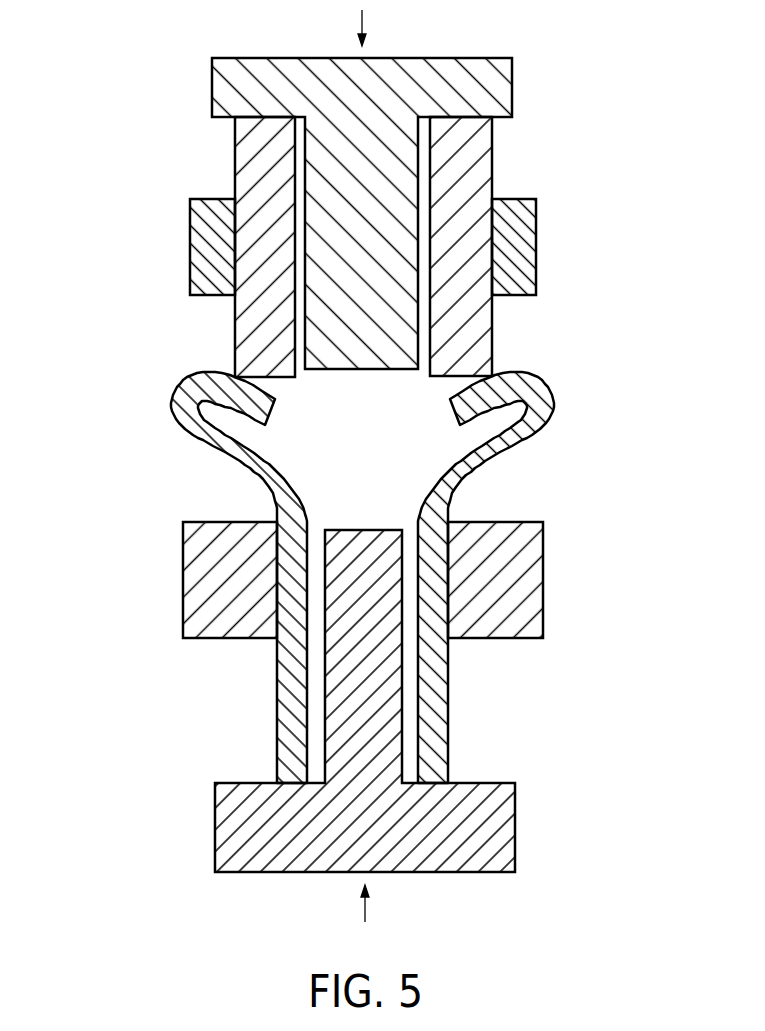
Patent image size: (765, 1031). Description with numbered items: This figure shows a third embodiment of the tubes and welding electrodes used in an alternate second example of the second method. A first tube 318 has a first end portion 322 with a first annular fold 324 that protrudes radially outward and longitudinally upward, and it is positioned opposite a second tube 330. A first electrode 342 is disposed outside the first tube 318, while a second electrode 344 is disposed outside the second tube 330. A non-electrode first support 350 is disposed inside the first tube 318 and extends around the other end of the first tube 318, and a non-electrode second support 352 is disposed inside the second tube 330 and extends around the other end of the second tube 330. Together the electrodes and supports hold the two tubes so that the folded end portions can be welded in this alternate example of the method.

The first tube 318 is at (339, 574).
The first end portion 322 is at (158, 400).
The first annular fold 324 is at (557, 398).
The second tube 330 is at (204, 166).
The first electrode 342 is at (533, 585).
The second electrode 344 is at (195, 247).
The first support 350 is at (222, 828).
The second support 352 is at (506, 85).